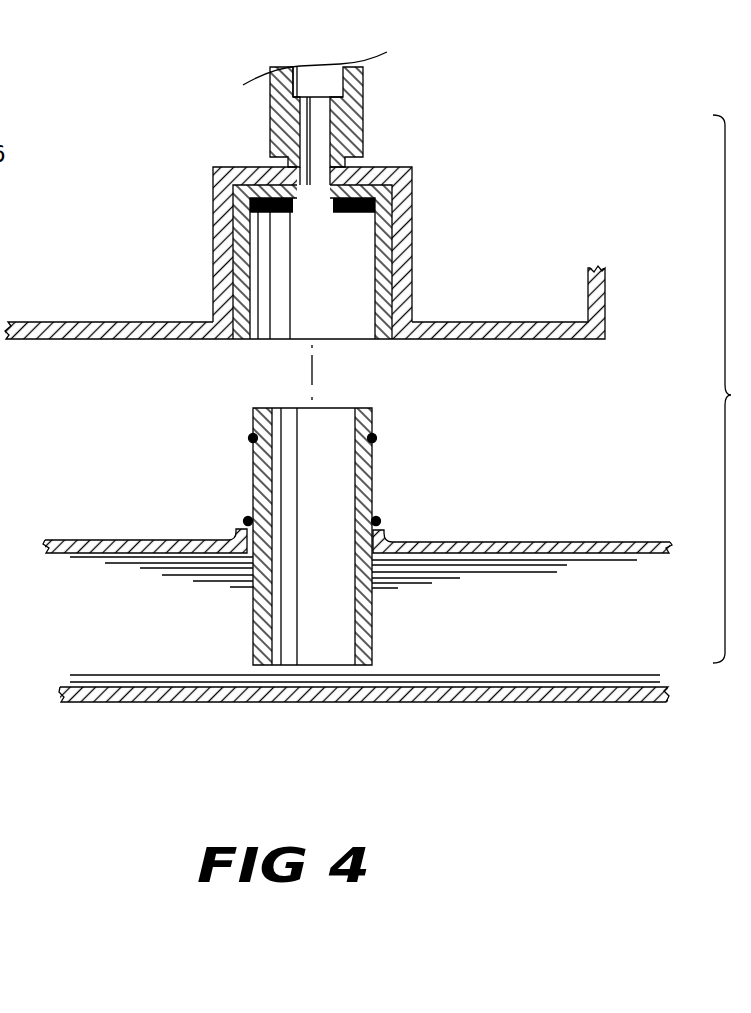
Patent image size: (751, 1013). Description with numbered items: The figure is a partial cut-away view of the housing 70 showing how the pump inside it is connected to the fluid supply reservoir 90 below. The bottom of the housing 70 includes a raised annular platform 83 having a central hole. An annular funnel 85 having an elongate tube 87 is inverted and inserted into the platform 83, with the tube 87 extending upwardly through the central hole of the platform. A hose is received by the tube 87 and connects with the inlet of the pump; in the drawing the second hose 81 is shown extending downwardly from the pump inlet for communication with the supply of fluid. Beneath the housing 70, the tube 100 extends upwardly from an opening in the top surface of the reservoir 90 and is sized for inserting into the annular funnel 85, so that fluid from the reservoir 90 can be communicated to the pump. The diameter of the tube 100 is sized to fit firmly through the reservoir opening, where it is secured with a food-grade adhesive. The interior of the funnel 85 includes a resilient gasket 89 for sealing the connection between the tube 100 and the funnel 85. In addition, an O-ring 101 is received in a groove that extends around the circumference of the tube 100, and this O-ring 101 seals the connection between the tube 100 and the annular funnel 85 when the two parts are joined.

The housing 70 is at (85, 340).
The second hose 81 is at (363, 75).
The raised annular platform 83 is at (213, 242).
The annular funnel 85 is at (248, 340).
The elongate tube 87 is at (300, 97).
The resilient gasket 89 is at (350, 212).
The fluid supply reservoir 90 is at (510, 541).
The tube 100 is at (373, 488).
The O-ring 101 is at (376, 436).